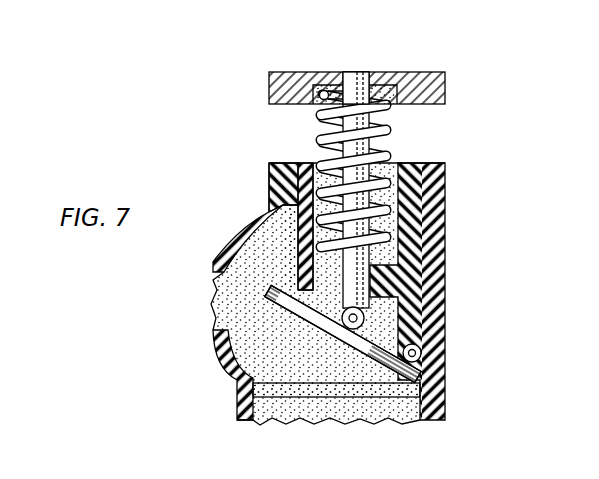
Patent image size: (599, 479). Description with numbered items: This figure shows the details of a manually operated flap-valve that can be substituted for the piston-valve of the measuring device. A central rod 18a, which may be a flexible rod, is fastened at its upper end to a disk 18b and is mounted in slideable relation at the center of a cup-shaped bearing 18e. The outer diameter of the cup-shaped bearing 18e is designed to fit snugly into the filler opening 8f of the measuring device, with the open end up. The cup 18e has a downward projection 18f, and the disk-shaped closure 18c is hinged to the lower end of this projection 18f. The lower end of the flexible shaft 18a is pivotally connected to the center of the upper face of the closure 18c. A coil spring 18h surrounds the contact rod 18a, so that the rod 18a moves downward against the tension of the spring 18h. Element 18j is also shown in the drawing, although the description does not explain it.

The filler opening 8f is at (268, 232).
The central rod 18a is at (355, 80).
The disk 18b is at (293, 82).
The disk-shaped closure 18c is at (362, 357).
The cup-shaped bearing 18e is at (436, 291).
The downward projection 18f is at (413, 333).
The coil spring 18h is at (389, 177).
The bottom plate 18j is at (268, 421).